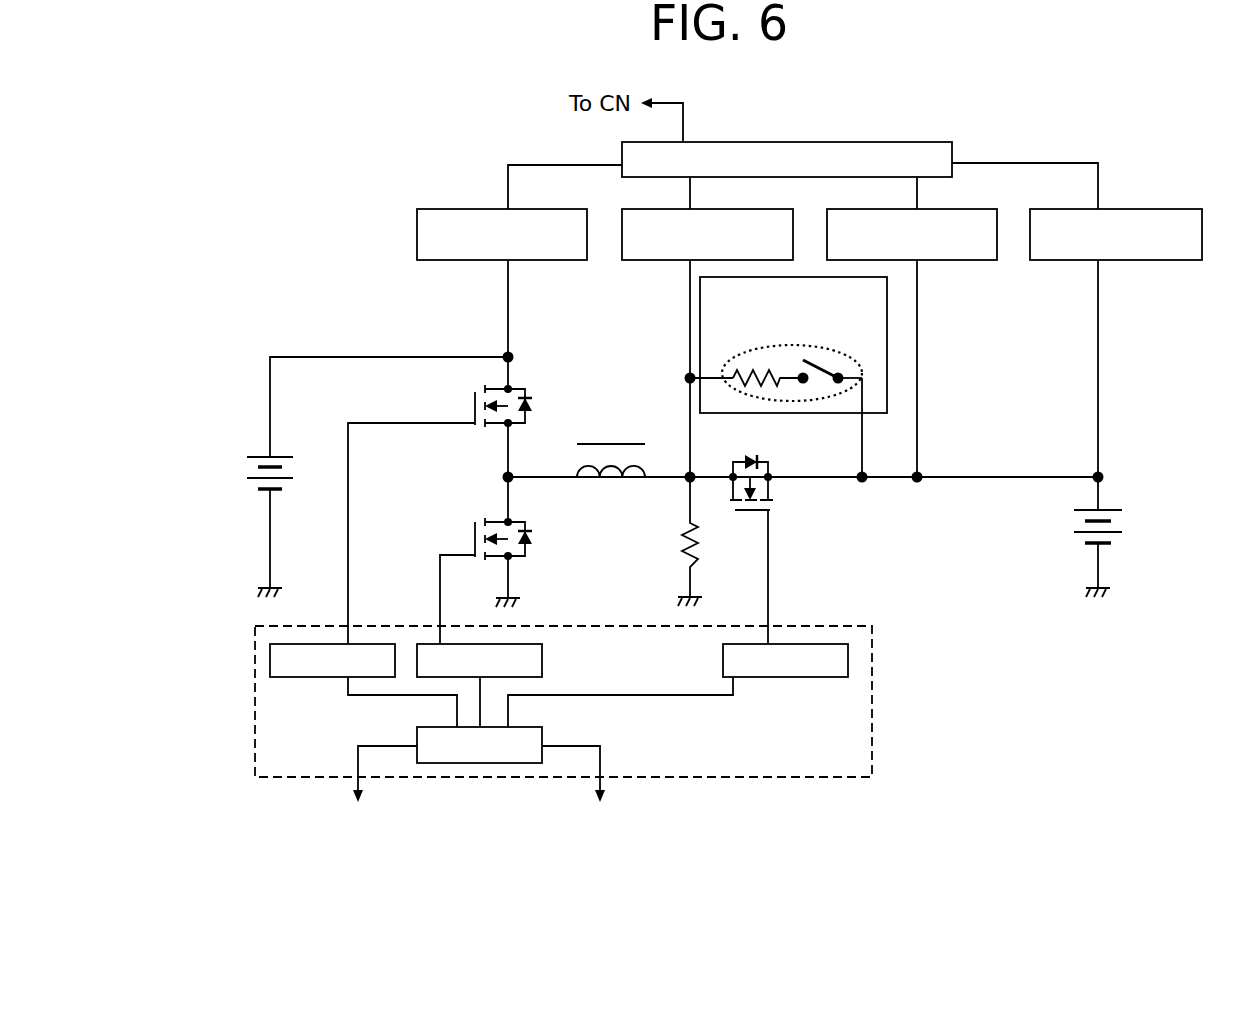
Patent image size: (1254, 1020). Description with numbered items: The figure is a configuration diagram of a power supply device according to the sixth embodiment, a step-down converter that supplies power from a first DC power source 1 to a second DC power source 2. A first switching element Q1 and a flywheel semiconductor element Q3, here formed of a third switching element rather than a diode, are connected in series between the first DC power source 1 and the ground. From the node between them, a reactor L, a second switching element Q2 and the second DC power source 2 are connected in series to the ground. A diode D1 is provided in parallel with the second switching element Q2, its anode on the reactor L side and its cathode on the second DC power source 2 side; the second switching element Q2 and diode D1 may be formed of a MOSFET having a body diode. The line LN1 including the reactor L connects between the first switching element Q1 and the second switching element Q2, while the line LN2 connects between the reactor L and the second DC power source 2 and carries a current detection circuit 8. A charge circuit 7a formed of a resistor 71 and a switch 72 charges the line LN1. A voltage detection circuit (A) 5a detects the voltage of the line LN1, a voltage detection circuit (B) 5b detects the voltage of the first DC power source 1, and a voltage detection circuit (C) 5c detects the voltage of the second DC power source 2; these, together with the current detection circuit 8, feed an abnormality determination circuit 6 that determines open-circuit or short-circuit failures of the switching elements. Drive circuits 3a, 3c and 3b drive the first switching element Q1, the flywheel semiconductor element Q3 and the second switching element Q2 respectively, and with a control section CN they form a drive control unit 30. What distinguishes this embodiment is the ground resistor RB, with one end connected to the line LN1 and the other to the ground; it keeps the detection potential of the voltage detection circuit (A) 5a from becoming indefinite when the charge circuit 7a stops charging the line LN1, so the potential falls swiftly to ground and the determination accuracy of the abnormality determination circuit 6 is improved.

The first DC power source 1 is at (242, 455).
The second DC power source 2 is at (1067, 528).
The drive circuit 3a is at (270, 665).
The drive circuit 3b is at (848, 660).
The drive circuit 3c is at (542, 660).
The voltage detection circuit (A) 5a is at (743, 209).
The voltage detection circuit (B) 5b is at (533, 209).
The voltage detection circuit (C) 5c is at (1170, 209).
The abnormality determination circuit 6 is at (937, 142).
The charge circuit 7a is at (833, 345).
The current detection circuit 8 is at (957, 209).
The drive control unit 30 is at (560, 628).
The resistor 71 is at (752, 372).
The switch 72 is at (825, 363).
The first switching element Q1 is at (538, 407).
The second switching element Q2 is at (789, 508).
The flywheel semiconductor element Q3 is at (535, 545).
The diode D1 is at (752, 458).
The reactor L is at (600, 480).
The ground resistor RB is at (677, 545).
The line LN1 is at (677, 460).
The line LN2 is at (972, 480).
The control section CN is at (542, 735).